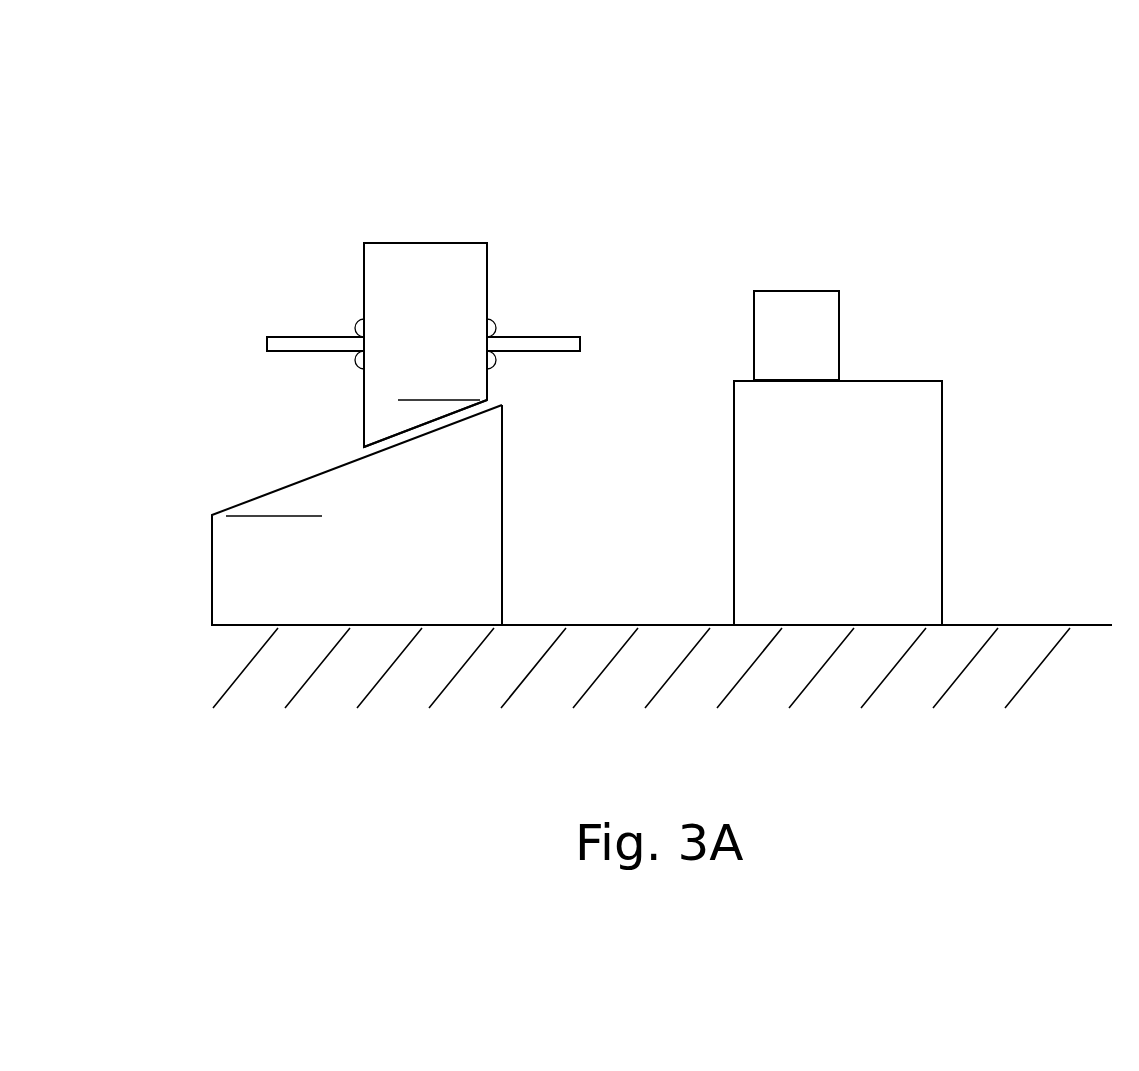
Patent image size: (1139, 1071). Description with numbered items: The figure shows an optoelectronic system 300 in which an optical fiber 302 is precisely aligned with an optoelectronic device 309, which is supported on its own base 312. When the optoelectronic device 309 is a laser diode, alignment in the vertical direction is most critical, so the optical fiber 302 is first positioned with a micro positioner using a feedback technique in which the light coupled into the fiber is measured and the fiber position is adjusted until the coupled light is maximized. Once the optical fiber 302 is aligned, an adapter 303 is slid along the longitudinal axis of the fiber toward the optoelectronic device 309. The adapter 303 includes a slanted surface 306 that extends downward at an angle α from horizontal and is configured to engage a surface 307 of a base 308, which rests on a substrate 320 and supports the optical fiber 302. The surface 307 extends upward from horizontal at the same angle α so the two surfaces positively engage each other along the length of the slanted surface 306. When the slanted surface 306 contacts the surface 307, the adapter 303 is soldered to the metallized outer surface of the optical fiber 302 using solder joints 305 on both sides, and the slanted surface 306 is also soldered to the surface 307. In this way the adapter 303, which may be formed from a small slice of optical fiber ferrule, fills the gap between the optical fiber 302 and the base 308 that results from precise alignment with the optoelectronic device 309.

The optoelectronic system 300 is at (652, 143).
The optical fiber 302 is at (553, 330).
The adapter 303 is at (420, 235).
The solder joints 305 is at (357, 328).
The slanted surface 306 is at (385, 435).
The surface 307 is at (267, 483).
The base 308 is at (504, 543).
The optoelectronic device 309 is at (805, 280).
The base 312 is at (928, 375).
The substrate 320 is at (1020, 618).